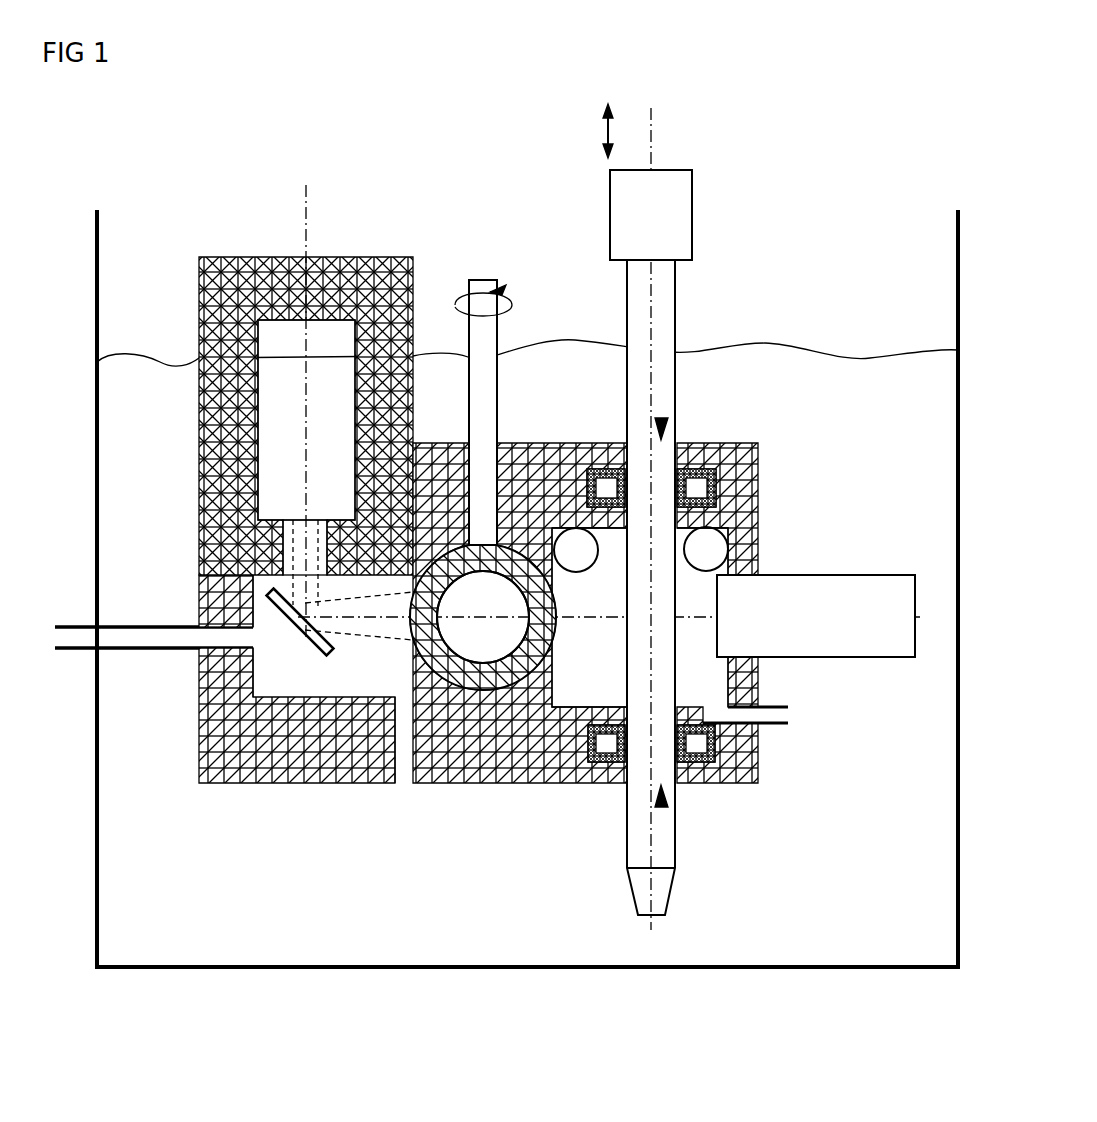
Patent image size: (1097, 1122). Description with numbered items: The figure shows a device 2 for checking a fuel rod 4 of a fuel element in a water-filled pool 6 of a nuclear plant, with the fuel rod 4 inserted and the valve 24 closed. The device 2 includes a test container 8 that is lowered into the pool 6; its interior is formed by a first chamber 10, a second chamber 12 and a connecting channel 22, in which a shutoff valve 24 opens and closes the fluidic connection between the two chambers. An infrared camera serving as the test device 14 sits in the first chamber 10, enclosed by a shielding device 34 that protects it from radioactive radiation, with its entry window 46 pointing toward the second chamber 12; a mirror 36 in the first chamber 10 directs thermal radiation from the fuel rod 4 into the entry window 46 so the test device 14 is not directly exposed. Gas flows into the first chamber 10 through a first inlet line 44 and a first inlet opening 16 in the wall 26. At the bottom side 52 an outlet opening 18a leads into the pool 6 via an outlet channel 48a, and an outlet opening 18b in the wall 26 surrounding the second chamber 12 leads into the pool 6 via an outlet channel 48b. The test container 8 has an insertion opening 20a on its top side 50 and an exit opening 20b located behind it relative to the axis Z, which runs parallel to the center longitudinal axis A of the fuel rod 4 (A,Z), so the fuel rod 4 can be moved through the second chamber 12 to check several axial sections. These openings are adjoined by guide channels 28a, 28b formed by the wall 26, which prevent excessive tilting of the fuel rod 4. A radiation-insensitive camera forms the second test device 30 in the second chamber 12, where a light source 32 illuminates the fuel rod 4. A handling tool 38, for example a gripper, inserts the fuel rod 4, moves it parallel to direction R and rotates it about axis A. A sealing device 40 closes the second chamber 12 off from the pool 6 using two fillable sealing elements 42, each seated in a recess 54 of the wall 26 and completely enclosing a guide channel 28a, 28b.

The device 2 is at (798, 408).
The fuel rod 4 is at (668, 272).
The water-filled pool 6 is at (840, 968).
The test container 8 is at (758, 495).
The first chamber 10 is at (300, 682).
The second chamber 12 is at (596, 696).
The test device 14 is at (272, 432).
The first inlet opening 16 is at (200, 668).
The outlet opening 18a is at (394, 715).
The outlet opening 18b is at (715, 697).
The insertion opening 20a is at (661, 425).
The exit opening 20b is at (661, 800).
The connecting channel 22 is at (485, 682).
The valve 24 is at (502, 606).
The wall 26 is at (740, 470).
The guide channel 28a is at (690, 503).
The guide channel 28b is at (692, 745).
The second test device 30 is at (900, 660).
The light source 32 is at (576, 548).
The shielding device 34 is at (372, 272).
The mirror 36 is at (266, 610).
The handling tool 38 is at (678, 207).
The sealing device 40 is at (672, 617).
The sealing elements 42 is at (606, 490).
The first inlet line 44 is at (75, 648).
The entry window 46 is at (290, 540).
The outlet channel 48a is at (403, 700).
The outlet channel 48b is at (772, 720).
The top side 50 is at (428, 443).
The bottom side 52 is at (226, 790).
The recess 54 is at (725, 503).
The direction R is at (600, 130).
The center longitudinal axis and axis A,Z is at (655, 128).